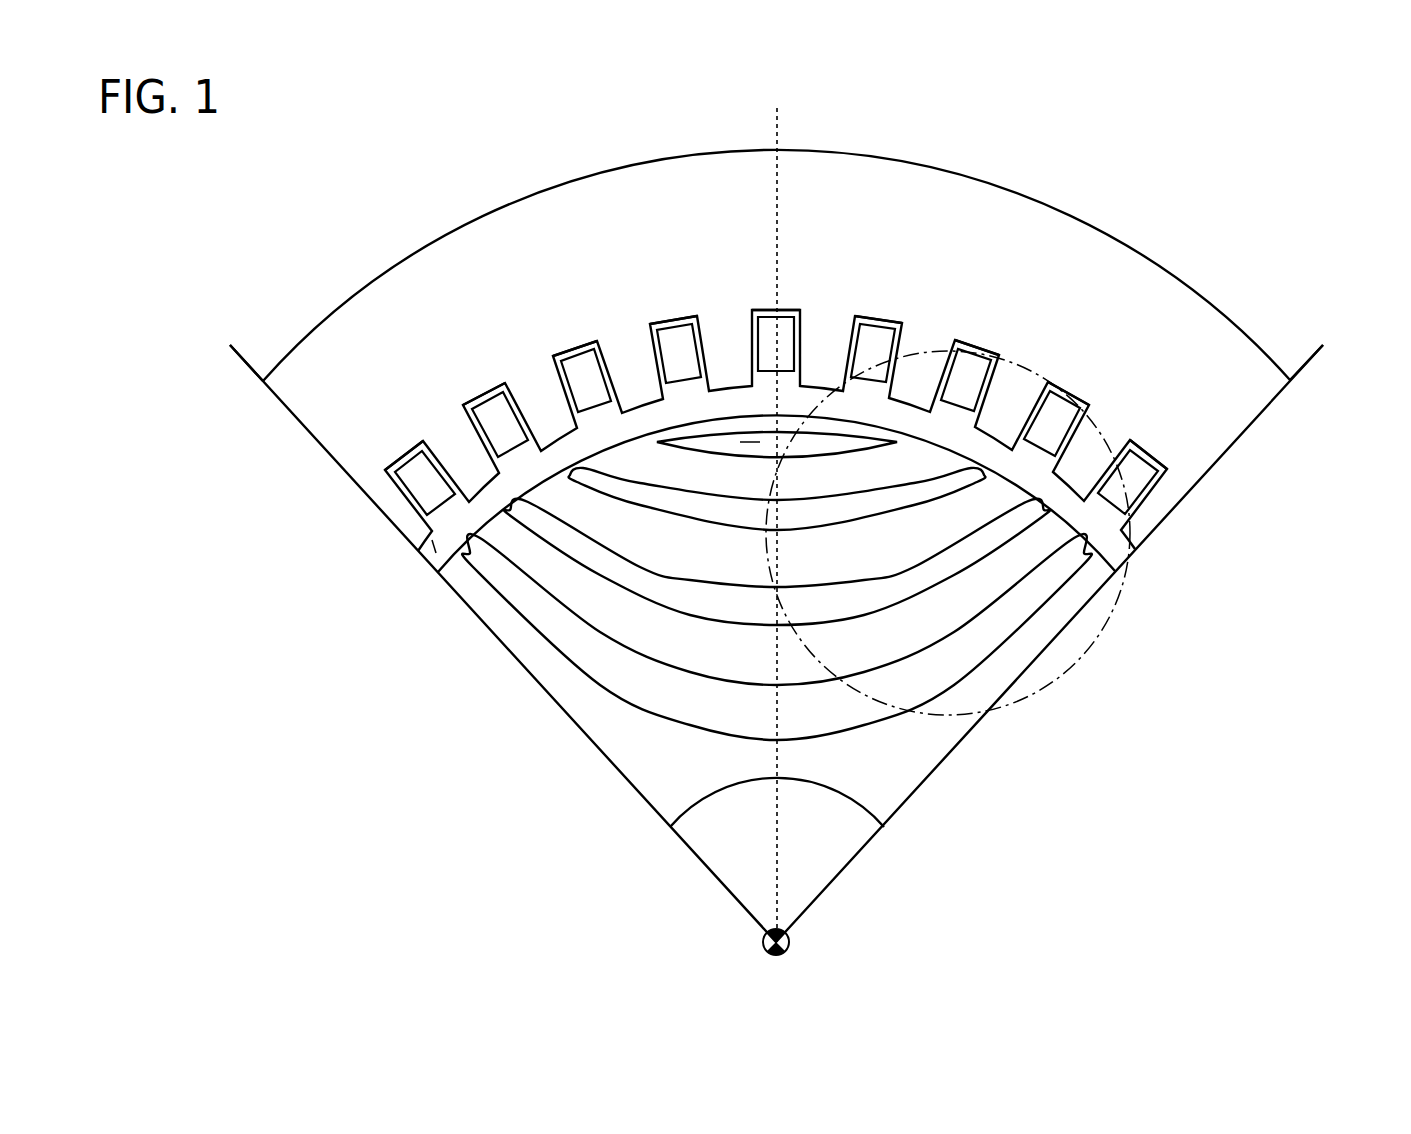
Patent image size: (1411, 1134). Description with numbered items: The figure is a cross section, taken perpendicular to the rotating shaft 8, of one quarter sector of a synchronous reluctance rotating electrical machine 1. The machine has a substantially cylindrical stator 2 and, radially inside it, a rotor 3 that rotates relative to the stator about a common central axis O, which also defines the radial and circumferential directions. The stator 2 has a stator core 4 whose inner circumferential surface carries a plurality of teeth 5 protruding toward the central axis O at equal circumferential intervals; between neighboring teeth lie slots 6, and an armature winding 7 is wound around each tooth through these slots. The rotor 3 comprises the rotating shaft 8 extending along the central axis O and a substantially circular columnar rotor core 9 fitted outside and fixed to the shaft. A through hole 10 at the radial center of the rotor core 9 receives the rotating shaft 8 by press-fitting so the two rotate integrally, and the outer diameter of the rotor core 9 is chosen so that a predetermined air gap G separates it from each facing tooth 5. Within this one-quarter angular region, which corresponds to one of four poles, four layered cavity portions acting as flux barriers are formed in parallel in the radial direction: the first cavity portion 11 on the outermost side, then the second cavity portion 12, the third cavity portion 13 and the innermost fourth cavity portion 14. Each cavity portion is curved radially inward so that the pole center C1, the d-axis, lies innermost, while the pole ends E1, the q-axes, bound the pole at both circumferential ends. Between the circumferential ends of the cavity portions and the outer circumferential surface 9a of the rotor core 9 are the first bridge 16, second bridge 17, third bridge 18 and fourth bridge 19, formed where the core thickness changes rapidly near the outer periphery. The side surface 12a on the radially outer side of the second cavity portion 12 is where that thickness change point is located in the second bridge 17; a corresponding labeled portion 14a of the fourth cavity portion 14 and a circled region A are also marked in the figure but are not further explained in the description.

The rotating electrical machine 1 is at (1250, 236).
The stator 2 is at (1116, 230).
The rotor 3 is at (966, 752).
The stator core 4 is at (890, 178).
The teeth 5 is at (572, 442).
The slots 6 is at (508, 425).
The armature winding 7 is at (413, 470).
The rotating shaft 8 is at (845, 878).
The rotor core 9 is at (914, 797).
The outer circumferential surface 9a is at (462, 540).
The through hole 10 is at (718, 792).
The first cavity portion 11 is at (760, 440).
The second cavity portion 12 is at (811, 405).
The side surface 12a is at (664, 492).
The third cavity portion 13 is at (650, 593).
The fourth cavity portion 14 is at (827, 680).
The fourth rib portion 14a is at (698, 726).
The first bridge 16 is at (893, 440).
The second bridge 17 is at (983, 470).
The third bridge 18 is at (1048, 505).
The fourth bridge 19 is at (1092, 548).
The reference circle A is at (958, 354).
The pole center C1 is at (780, 113).
The pole end E1 is at (1318, 365).
The air gap G is at (440, 547).
The central axis O is at (790, 946).